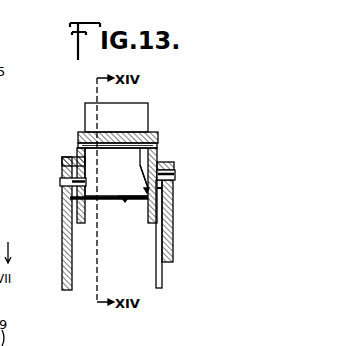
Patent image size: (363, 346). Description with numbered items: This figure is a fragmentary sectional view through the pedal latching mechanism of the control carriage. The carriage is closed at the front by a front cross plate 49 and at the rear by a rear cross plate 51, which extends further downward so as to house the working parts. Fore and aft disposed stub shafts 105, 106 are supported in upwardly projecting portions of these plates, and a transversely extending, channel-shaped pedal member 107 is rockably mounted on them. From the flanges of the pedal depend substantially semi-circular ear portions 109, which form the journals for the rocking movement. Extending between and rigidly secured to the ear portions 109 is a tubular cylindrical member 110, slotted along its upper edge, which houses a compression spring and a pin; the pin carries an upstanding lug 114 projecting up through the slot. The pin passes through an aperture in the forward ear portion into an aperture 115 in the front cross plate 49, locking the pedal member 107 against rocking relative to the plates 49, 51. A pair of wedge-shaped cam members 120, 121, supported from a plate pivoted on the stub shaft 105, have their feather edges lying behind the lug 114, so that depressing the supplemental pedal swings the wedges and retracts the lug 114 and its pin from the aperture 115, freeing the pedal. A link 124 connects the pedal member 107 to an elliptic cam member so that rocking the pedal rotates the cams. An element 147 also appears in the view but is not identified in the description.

The connector block 147 is at (135, 115).
The pedal member 107 is at (152, 133).
The wedge-shaped cam member 120 is at (156, 154).
The semi-circular ear portion 109 is at (79, 208).
The upstanding lug 114 is at (139, 167).
The rear cross plate 51 is at (63, 247).
The stub shaft 106 is at (67, 175).
The front cross plate 49 is at (173, 254).
The link 124 is at (158, 283).
The stub shaft 105 is at (175, 173).
The aperture 115 is at (172, 195).
The tubular cylindrical member 110 is at (134, 200).
The wedge-shaped cam member 121 is at (150, 205).